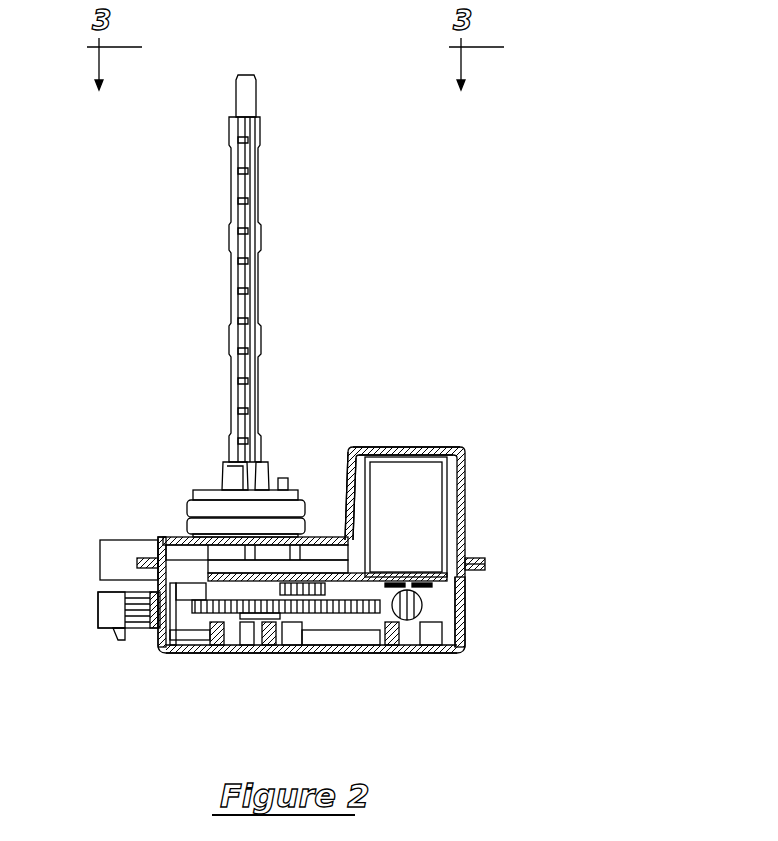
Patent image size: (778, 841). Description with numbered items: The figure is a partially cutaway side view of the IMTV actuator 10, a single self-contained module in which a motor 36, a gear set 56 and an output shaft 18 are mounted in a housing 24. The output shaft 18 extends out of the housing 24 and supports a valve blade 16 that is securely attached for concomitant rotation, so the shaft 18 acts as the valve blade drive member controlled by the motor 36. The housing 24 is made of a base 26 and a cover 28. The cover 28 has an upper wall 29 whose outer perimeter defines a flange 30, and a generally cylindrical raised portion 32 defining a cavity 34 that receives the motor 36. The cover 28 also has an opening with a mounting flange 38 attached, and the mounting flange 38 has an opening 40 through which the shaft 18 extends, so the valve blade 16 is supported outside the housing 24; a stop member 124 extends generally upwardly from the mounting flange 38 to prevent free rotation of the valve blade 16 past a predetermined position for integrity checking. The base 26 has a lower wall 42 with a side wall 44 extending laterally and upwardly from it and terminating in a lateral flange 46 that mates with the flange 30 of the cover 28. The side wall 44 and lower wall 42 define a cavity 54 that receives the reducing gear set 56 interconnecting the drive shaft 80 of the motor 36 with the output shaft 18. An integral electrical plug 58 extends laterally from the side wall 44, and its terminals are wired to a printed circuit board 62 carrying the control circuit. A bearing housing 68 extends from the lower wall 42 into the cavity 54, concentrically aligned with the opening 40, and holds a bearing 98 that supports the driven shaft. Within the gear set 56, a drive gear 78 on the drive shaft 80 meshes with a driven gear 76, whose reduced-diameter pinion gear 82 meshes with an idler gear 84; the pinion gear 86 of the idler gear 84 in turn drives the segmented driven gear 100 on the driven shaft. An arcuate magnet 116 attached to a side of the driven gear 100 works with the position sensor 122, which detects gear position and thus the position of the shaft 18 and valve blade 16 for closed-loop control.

The IMTV actuator 10 is at (458, 324).
The valve blade 16 is at (258, 131).
The output shaft 18 is at (243, 99).
The housing 24 is at (472, 486).
The base 26 is at (460, 652).
The cover 28 is at (450, 447).
The upper wall 29 is at (424, 447).
The flange 30 is at (485, 560).
The raised portion 32 is at (352, 492).
The cavity 34 is at (392, 447).
The motor 36 is at (435, 510).
The mounting flange 38 is at (205, 490).
The opening 40 is at (258, 462).
The lower wall 42 is at (282, 648).
The side wall 44 is at (465, 608).
The lateral flange 46 is at (485, 566).
The cavity 54 is at (465, 618).
The gear set 56 is at (194, 574).
The electrical plug 58 is at (98, 618).
The printed circuit board 62 is at (178, 650).
The bearing housing 68 is at (250, 648).
The driven gear 76 is at (405, 625).
The drive gear 78 is at (418, 640).
The drive shaft 80 is at (400, 582).
The pinion gear 82 is at (372, 578).
The idler gear 84 is at (355, 573).
The pinion gear 86 is at (342, 650).
The bearing 98 is at (216, 645).
The segmented driven gear 100 is at (166, 625).
The magnet 116 is at (232, 648).
The sensor 122 is at (298, 648).
The stop member 124 is at (283, 478).